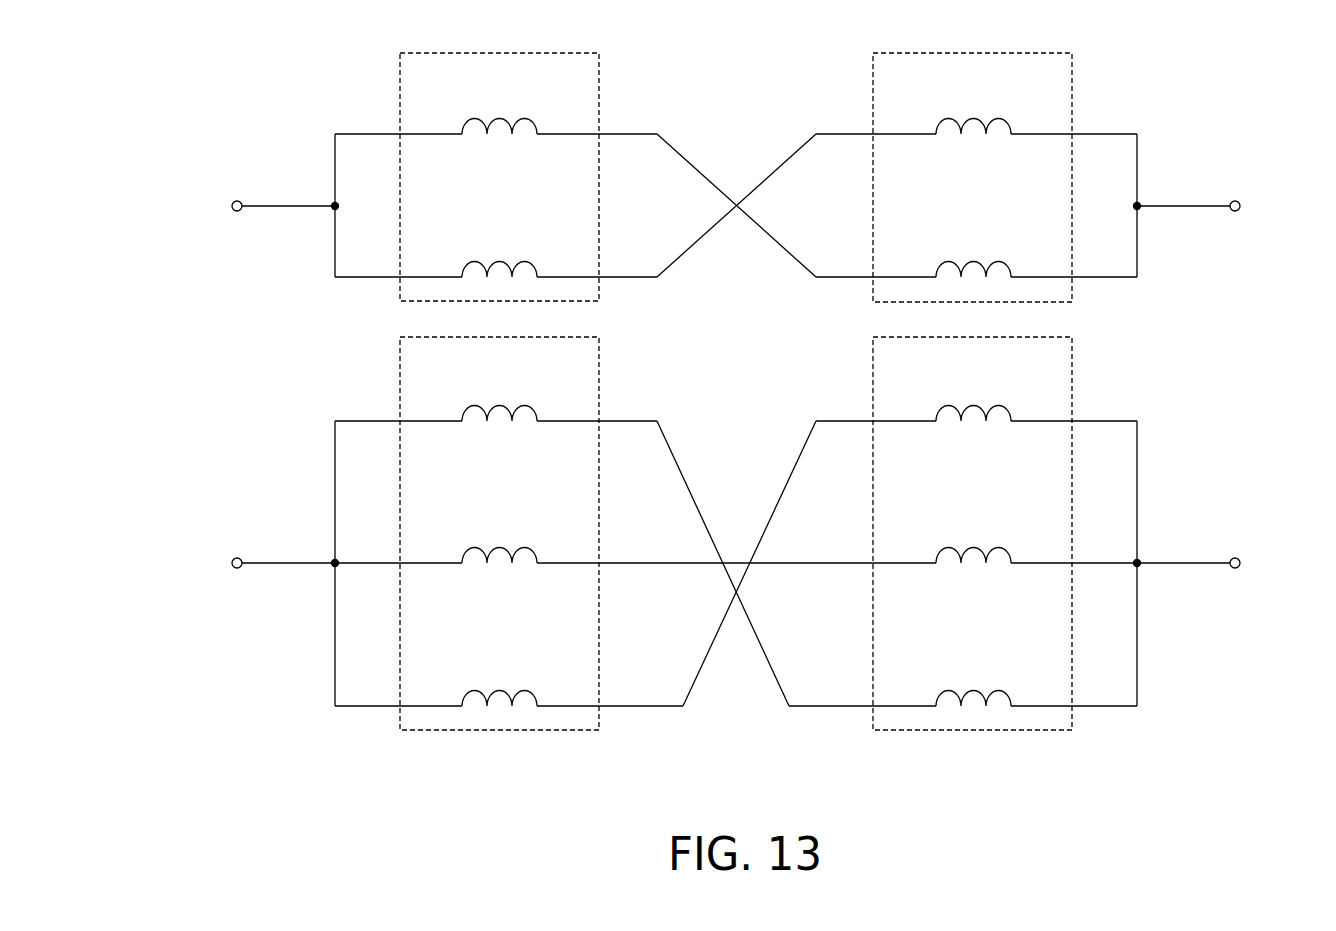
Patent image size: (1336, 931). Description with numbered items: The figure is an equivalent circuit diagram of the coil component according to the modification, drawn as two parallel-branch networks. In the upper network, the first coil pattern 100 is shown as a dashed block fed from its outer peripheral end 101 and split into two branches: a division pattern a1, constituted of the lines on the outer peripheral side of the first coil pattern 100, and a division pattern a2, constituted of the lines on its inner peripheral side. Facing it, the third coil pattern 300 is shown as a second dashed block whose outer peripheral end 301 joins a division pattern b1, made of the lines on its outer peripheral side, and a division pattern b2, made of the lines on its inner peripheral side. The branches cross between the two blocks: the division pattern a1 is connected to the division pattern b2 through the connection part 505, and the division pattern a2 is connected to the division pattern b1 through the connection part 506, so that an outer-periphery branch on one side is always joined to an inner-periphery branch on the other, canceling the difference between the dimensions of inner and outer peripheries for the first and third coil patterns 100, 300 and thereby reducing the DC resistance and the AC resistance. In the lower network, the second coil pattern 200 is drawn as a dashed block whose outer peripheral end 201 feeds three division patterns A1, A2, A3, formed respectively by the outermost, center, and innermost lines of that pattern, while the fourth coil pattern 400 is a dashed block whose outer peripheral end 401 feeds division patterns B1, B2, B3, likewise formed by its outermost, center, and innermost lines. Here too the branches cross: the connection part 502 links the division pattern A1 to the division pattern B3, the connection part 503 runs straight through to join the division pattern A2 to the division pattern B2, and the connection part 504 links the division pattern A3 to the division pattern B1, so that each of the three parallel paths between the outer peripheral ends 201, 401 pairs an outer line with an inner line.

The first coil pattern 100 is at (488, 52).
The second coil pattern 200 is at (488, 731).
The third coil pattern 300 is at (981, 52).
The fourth coil pattern 400 is at (982, 731).
The outer peripheral end 101 is at (230, 206).
The outer peripheral end 201 is at (230, 563).
The outer peripheral end 301 is at (1241, 205).
The outer peripheral end 401 is at (1241, 562).
The connection part 502 is at (668, 448).
The connection part 503 is at (735, 560).
The connection part 504 is at (695, 677).
The connection part 505 is at (695, 168).
The connection part 506 is at (695, 243).
The division pattern a1 is at (490, 118).
The division pattern a2 is at (490, 261).
The division pattern b1 is at (982, 118).
The division pattern b2 is at (982, 261).
The division pattern A1 is at (490, 405).
The division pattern A2 is at (490, 547).
The division pattern A3 is at (490, 690).
The division pattern B1 is at (982, 405).
The division pattern B2 is at (982, 547).
The division pattern B3 is at (982, 690).